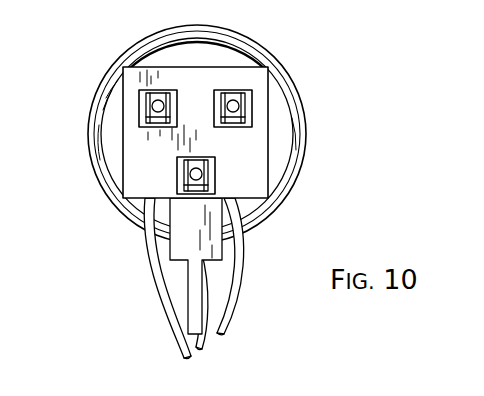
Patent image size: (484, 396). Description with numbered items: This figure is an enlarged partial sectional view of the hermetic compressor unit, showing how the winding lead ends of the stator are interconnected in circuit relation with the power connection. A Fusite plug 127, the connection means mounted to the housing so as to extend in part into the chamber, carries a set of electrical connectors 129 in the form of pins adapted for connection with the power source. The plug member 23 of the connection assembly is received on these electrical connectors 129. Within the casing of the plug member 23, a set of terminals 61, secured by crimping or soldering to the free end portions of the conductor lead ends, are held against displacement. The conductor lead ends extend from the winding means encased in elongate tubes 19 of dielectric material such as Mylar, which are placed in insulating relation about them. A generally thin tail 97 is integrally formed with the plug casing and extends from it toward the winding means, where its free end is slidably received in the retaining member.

The Fusite plug 127 is at (108, 59).
The electrical connectors 129 is at (152, 105).
The terminals 61 is at (146, 118).
The plug member 23 is at (270, 188).
The tail 97 is at (188, 302).
The elongate tubes 19 is at (172, 330).